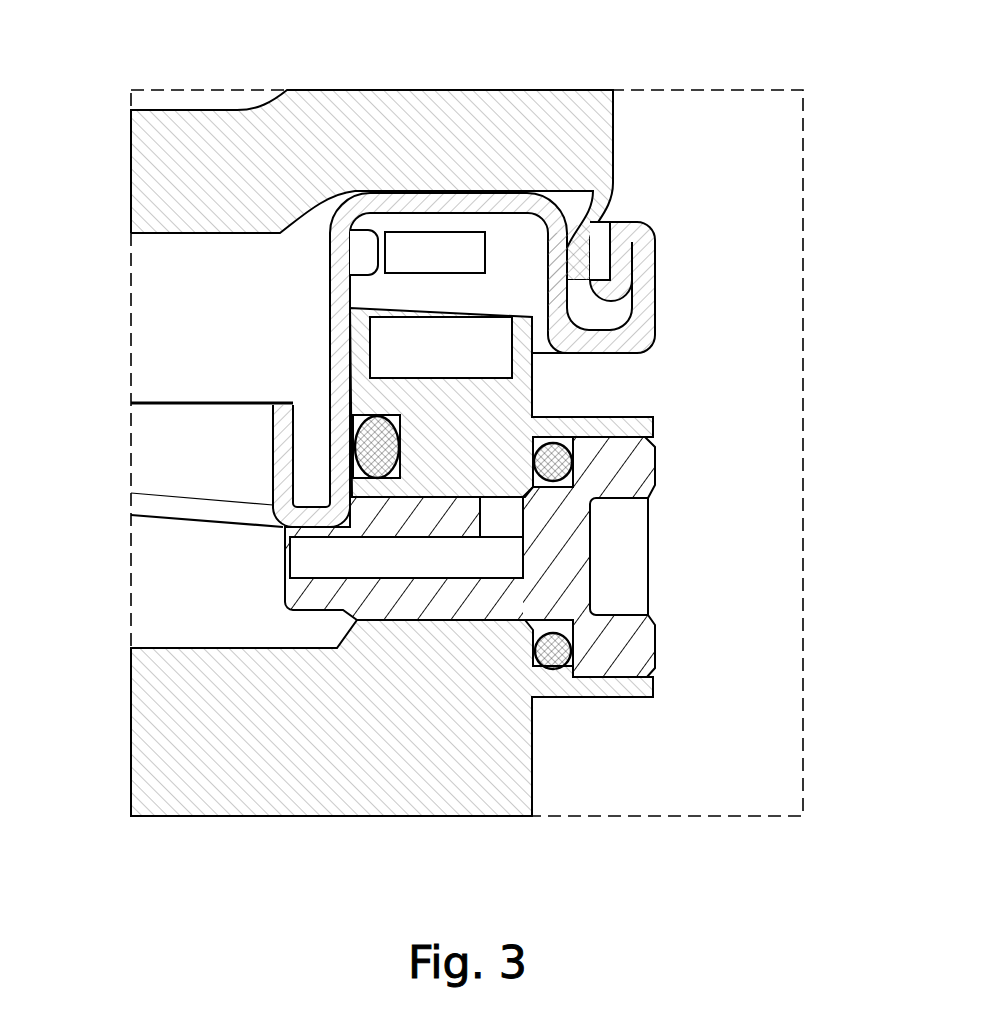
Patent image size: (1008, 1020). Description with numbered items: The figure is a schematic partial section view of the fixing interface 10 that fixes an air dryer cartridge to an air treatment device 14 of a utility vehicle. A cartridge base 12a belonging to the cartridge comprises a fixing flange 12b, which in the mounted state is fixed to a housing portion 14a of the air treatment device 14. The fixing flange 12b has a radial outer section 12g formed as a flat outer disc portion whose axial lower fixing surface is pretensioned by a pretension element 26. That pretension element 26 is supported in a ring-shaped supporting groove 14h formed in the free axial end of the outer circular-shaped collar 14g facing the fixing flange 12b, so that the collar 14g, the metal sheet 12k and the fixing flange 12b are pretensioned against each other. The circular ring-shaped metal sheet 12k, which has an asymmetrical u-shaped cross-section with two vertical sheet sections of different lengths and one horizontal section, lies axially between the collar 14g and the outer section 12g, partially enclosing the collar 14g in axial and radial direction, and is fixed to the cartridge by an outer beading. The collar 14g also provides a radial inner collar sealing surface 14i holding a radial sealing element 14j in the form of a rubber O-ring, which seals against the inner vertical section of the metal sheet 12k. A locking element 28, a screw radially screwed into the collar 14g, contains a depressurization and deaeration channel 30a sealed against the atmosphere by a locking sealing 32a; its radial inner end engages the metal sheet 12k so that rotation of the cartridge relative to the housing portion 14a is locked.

The fixing interface 10 is at (675, 195).
The cartridge base 12a is at (178, 102).
The fixing flange 12b is at (153, 140).
The radial outer section 12g is at (549, 107).
The circular ring-shaped metal sheet 12k is at (340, 387).
The air treatment device 14 is at (573, 757).
The housing portion 14a is at (175, 700).
The outer circular-shaped collar 14g is at (440, 437).
The ring-shaped supporting groove 14h is at (372, 338).
The radial inner collar sealing surface 14i is at (407, 412).
The radial sealing element 14j is at (358, 453).
The pretension element 26 is at (450, 263).
The locking element 28 is at (548, 543).
The depressurization and deaeration channel 30a is at (343, 562).
The locking sealing 32a is at (550, 652).